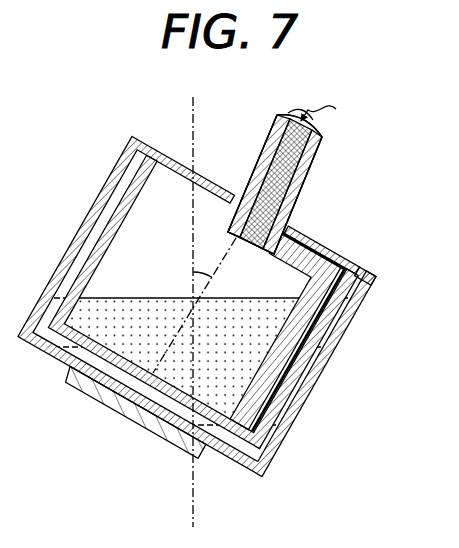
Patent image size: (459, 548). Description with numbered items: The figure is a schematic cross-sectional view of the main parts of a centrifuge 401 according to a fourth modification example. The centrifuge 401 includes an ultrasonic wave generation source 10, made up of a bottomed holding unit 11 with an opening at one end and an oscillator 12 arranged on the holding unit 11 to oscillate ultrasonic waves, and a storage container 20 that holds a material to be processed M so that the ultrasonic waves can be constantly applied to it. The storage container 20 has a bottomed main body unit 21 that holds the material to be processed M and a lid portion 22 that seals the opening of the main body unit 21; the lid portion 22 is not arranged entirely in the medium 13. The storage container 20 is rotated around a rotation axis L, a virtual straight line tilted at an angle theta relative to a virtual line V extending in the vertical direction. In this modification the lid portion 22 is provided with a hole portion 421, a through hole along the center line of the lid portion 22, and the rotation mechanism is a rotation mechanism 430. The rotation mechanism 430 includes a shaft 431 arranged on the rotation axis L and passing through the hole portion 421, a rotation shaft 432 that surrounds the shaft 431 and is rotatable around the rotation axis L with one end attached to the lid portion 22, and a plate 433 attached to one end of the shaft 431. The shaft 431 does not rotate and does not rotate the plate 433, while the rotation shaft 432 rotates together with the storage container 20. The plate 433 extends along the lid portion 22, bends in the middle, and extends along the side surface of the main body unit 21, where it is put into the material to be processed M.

The ultrasonic wave generation source 10 is at (197, 333).
The holding unit 11 is at (276, 472).
The oscillator 12 is at (203, 458).
The medium 13 is at (266, 442).
The storage container 20 is at (370, 255).
The main body unit 21 is at (368, 270).
The lid portion 22 is at (344, 250).
The centrifuge 401 is at (360, 193).
The hole portion 421 is at (233, 213).
The rotation mechanism 430 is at (265, 191).
The shaft 431 is at (234, 240).
The rotation shaft 432 is at (258, 168).
The plate 433 is at (306, 279).
The material to be processed M is at (136, 298).
The virtual line V is at (191, 117).
The rotation axis L is at (319, 102).